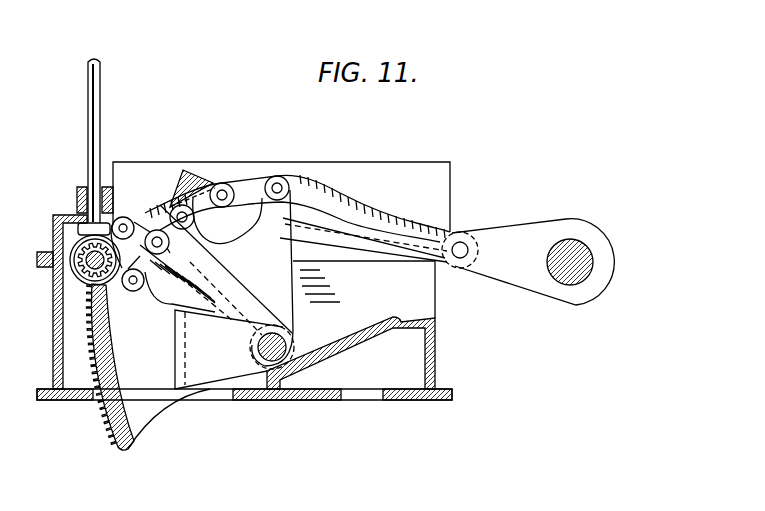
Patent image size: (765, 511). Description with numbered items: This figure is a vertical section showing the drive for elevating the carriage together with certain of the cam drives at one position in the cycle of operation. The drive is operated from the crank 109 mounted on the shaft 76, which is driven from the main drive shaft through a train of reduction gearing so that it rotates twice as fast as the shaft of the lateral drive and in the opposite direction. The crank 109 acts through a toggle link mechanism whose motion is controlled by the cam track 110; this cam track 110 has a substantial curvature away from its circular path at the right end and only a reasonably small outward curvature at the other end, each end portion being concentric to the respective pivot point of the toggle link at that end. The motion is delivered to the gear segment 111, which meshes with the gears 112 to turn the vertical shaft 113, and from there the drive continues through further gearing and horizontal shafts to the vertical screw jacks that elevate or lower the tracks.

The vertical shaft 113 is at (87, 105).
The gears 112 is at (73, 277).
The gear segment 111 is at (93, 333).
The cam track 110 is at (330, 186).
The crank 109 is at (505, 230).
The shaft 76 is at (582, 254).